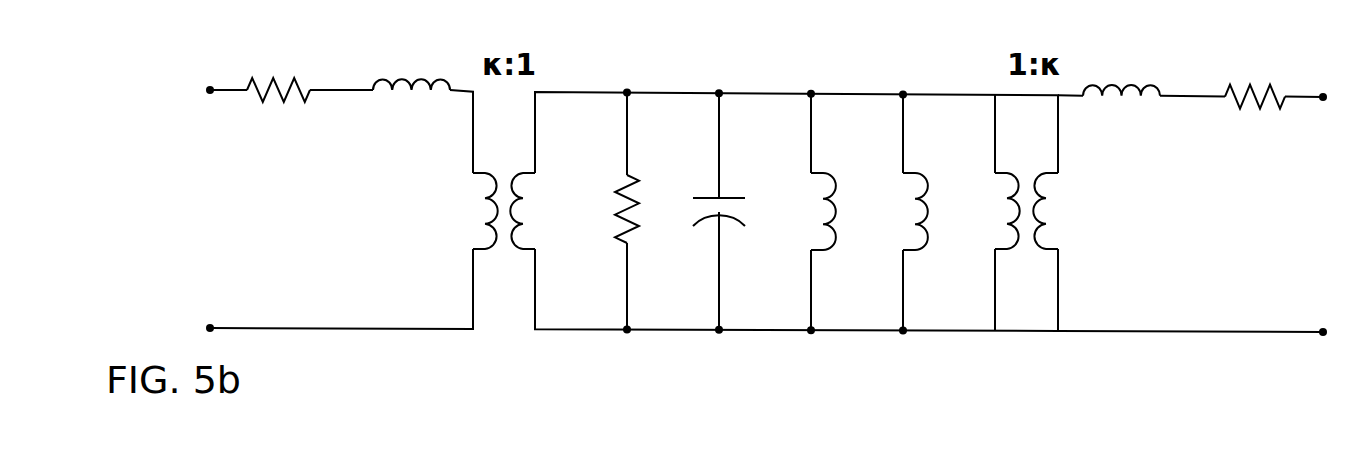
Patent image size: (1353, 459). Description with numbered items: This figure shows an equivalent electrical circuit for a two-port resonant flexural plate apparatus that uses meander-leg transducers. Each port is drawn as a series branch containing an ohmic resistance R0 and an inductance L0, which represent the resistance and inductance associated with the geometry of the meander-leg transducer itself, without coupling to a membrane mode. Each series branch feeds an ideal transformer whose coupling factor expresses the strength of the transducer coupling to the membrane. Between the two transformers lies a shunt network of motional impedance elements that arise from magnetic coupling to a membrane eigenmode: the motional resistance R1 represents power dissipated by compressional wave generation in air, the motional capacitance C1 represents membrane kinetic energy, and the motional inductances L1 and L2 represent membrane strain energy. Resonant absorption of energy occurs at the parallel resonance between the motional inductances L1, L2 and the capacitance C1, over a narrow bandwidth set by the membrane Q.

The ohmic resistance R0 is at (766, 65).
The inductance L0 is at (766, 59).
The motional resistance R1 is at (605, 211).
The motional capacitance C1 is at (700, 211).
The motional inductance L1 is at (809, 212).
The motional inductance L2 is at (899, 212).